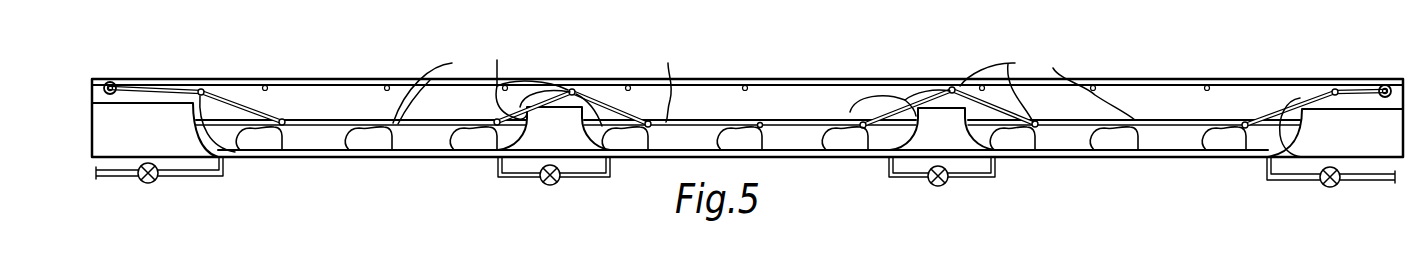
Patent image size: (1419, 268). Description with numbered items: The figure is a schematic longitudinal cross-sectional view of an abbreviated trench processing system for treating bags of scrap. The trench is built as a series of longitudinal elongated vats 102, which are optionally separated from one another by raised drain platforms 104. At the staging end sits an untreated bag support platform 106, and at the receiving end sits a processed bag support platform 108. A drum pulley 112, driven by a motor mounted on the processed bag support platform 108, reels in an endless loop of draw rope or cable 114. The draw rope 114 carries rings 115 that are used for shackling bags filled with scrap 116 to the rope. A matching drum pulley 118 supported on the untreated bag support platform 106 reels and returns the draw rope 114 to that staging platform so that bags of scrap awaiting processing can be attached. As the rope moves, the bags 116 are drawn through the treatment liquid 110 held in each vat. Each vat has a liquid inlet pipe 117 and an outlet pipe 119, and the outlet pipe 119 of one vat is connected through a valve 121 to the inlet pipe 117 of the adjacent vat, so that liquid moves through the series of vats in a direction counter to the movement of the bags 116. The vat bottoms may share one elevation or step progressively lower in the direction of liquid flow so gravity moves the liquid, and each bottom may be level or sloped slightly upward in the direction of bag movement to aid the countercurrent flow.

The longitudinal elongated vat 102 is at (314, 100).
The raised drain platform 104 is at (570, 139).
The untreated bag support platform 106 is at (162, 136).
The processed bag support platform 108 is at (1370, 141).
The treatment liquid 110 is at (421, 127).
The drum pulley 112 is at (1385, 85).
The draw rope 114 is at (234, 106).
The ring 115 is at (847, 100).
The bag filled with scrap 116 is at (268, 142).
The liquid inlet pipe 117 is at (497, 167).
The matching drum pulley 118 is at (110, 82).
The outlet pipe 119 is at (223, 172).
The valve 121 is at (150, 184).